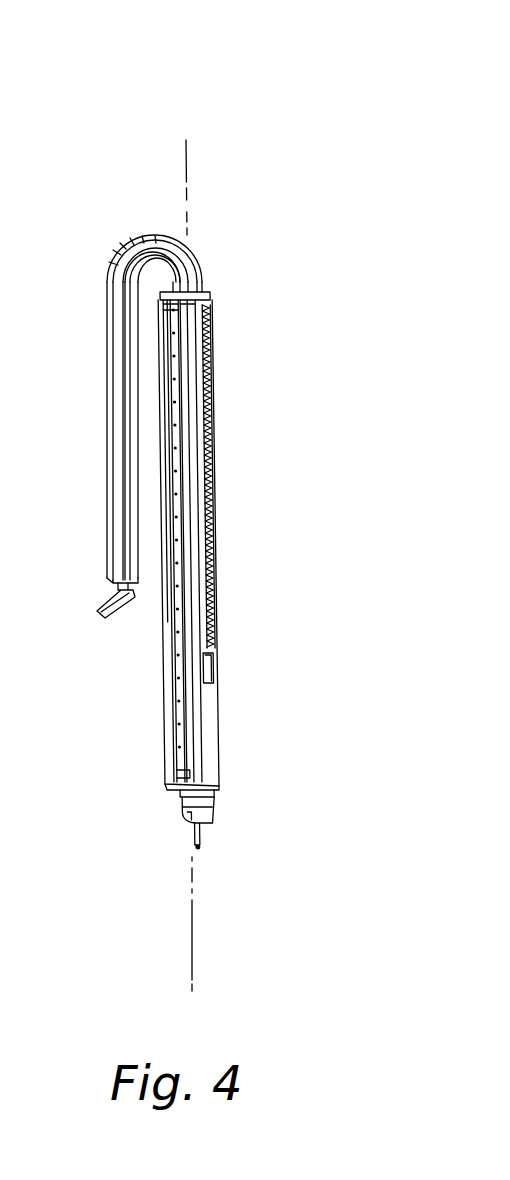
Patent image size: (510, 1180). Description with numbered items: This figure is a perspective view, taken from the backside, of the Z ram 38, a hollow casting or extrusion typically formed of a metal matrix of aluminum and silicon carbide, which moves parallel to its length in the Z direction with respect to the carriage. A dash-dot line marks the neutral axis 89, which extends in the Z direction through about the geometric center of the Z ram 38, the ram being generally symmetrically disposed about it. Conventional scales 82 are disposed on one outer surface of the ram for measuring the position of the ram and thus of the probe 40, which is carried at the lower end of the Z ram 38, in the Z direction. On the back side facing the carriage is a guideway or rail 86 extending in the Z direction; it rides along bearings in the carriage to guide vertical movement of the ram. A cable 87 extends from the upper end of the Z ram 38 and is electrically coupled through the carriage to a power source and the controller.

The Z ram 38 is at (224, 116).
The neutral axis 89 is at (188, 191).
The cable 87 is at (120, 268).
The scales 82 is at (212, 361).
The rail 86 is at (170, 664).
The probe 40 is at (193, 838).